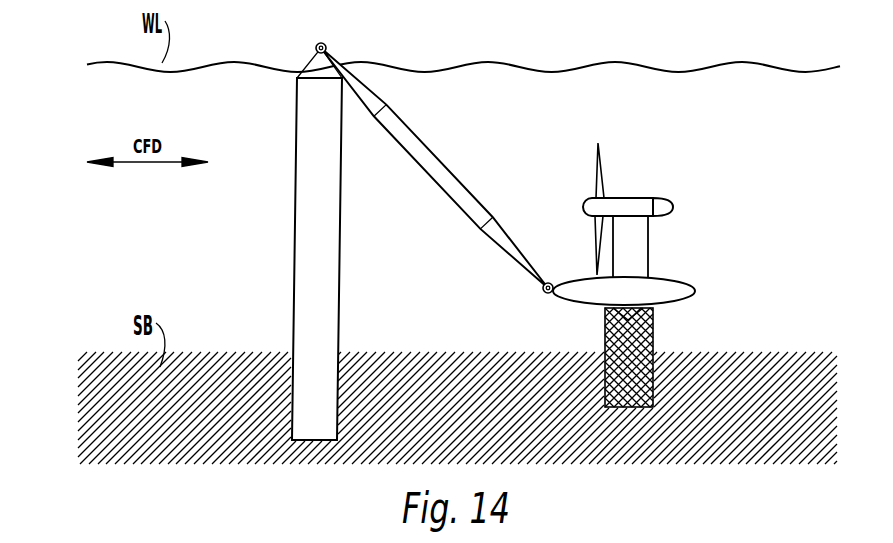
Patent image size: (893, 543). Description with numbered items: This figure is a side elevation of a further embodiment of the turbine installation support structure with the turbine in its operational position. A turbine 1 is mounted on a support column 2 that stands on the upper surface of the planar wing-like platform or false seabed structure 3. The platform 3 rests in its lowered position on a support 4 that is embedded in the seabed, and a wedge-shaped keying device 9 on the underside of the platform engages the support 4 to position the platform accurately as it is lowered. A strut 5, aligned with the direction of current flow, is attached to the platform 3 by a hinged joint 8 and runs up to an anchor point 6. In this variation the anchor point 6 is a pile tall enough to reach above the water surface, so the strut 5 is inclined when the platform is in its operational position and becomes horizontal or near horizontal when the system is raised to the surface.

The turbine 1 is at (593, 183).
The support column 2 is at (650, 245).
The planar wing-like platform or false seabed structure 3 is at (676, 290).
The support 4 is at (655, 340).
The strut 5 is at (445, 186).
The anchor point 6 is at (293, 279).
The hinged joint 8 is at (550, 283).
The wedge-shaped keying device 9 is at (606, 326).